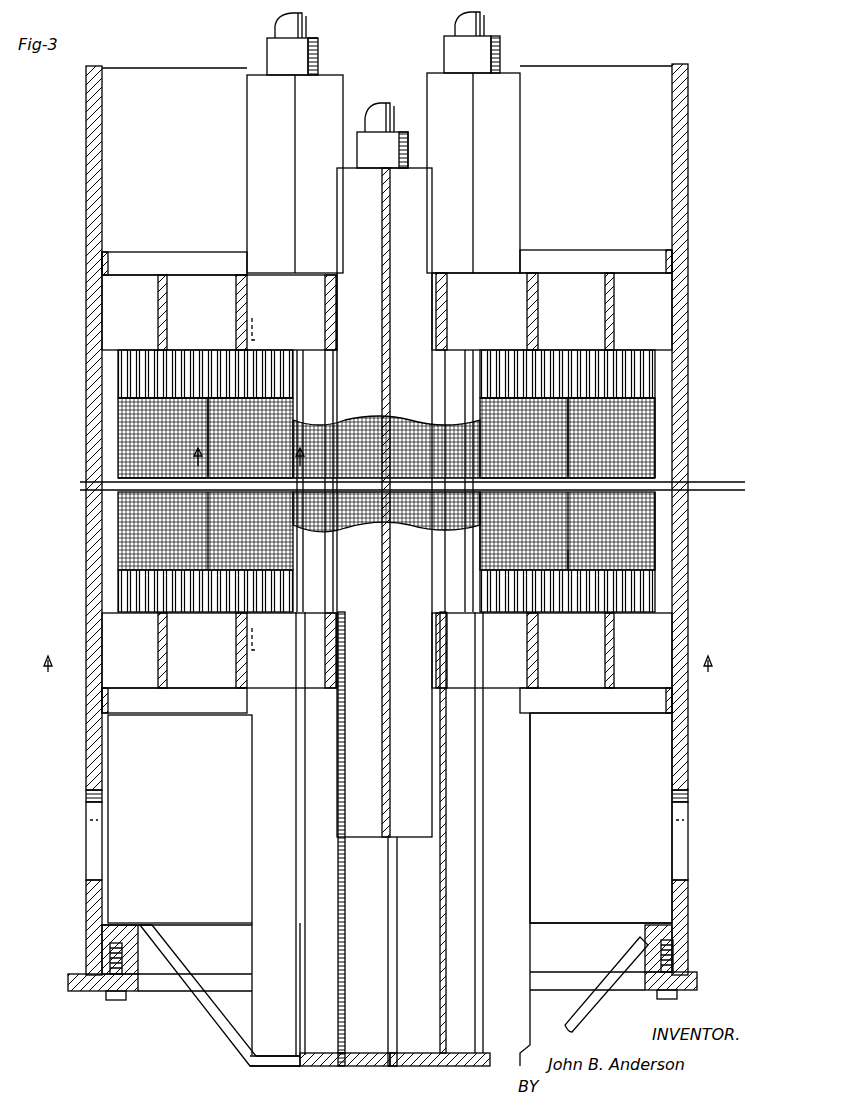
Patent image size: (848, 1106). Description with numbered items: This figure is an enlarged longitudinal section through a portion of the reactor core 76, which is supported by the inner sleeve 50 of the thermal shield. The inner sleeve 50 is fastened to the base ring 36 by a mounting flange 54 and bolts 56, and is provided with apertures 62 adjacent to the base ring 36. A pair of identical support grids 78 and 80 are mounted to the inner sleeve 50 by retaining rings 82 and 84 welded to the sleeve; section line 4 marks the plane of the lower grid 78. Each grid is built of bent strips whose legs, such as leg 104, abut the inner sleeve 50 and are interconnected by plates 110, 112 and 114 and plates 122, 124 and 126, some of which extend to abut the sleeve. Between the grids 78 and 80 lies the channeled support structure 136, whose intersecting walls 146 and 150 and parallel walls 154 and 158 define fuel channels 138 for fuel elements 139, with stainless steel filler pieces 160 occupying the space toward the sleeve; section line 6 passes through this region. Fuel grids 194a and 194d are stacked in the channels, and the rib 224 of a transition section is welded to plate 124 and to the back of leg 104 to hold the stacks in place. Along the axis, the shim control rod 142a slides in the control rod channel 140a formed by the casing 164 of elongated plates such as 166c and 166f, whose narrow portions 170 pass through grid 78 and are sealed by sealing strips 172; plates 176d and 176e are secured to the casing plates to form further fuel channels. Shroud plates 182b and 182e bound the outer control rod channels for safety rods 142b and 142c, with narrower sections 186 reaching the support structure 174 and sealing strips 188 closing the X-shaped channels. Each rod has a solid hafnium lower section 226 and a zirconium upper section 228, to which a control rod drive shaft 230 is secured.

The control rod drive shaft 230 is at (445, 18).
The control rod 142a is at (350, 132).
The control rod 142b is at (505, 110).
The control rod 142c is at (255, 143).
The upper section 228 is at (345, 200).
The retaining ring 84 is at (125, 262).
The support grid 80 is at (652, 322).
The inner sleeve 50 is at (676, 335).
The plate 126 is at (157, 292).
The plate 124 is at (236, 292).
The plate 122 is at (325, 292).
The rib 224 is at (258, 334).
The plate 110 is at (449, 302).
The plate 112 is at (538, 300).
The plate 114 is at (603, 298).
The fuel grid 194a is at (150, 415).
The fuel grid 194d is at (540, 415).
The fuel element 139 is at (622, 432).
The filler piece 160 is at (630, 447).
The wall 158 is at (118, 462).
The section line 6 is at (250, 455).
The reactor core 76 is at (386, 447).
The wall 146 is at (568, 506).
The fuel channel 138 is at (638, 510).
The wall 150 is at (205, 537).
The channeled support structure 136 is at (576, 556).
The wall 154 is at (645, 542).
The support grid 78 is at (656, 644).
The section line 4 is at (380, 672).
The leg 104 is at (152, 690).
The shroud plate 182e is at (265, 750).
The plate 176e is at (318, 770).
The narrower section 186 is at (262, 826).
The sealing strip 188 is at (300, 865).
The aperture 62 is at (100, 843).
The lower section 226 is at (367, 840).
The sealing strip 172 is at (395, 925).
The retaining ring 82 is at (612, 703).
The plate 176d is at (468, 798).
The shroud plate 182b is at (522, 807).
The control rod channel 140a is at (435, 882).
The base ring 36 is at (92, 988).
The mounting flange 54 is at (128, 996).
The bolt 56 is at (114, 1002).
The support structure 174 is at (210, 1022).
The plate 166f is at (336, 1060).
The plate 166c is at (440, 1062).
The casing 164 is at (368, 1062).
The narrow portion 170 is at (432, 1062).